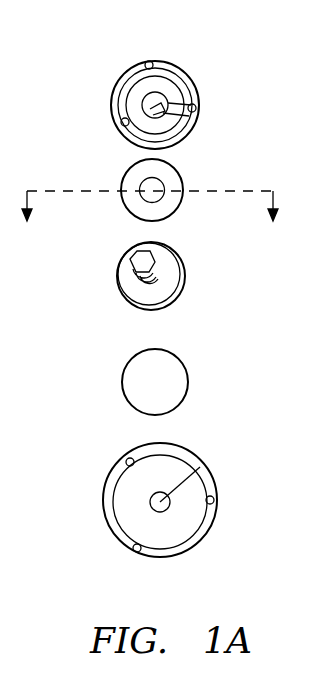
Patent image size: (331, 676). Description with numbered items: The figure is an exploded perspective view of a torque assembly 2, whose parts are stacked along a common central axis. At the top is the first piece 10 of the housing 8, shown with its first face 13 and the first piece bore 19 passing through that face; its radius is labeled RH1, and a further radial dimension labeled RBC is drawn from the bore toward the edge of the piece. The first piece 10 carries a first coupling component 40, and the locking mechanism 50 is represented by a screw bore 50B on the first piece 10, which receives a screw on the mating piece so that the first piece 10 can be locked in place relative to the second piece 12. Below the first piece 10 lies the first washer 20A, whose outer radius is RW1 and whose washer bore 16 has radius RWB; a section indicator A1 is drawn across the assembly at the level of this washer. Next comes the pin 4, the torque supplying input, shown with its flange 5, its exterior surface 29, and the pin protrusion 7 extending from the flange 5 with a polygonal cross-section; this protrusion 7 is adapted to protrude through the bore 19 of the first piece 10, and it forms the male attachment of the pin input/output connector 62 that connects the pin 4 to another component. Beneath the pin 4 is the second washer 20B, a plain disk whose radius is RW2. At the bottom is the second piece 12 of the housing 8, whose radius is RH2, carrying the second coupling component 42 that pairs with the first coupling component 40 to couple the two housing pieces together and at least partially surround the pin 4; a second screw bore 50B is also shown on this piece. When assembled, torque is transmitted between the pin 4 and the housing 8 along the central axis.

The torque assembly 2 is at (97, 318).
The pin 4 is at (185, 285).
The flange 5 is at (163, 312).
The pin protrusion 7 is at (143, 262).
The housing 8 is at (185, 75).
The first piece 10 is at (188, 90).
The second piece 12 is at (178, 530).
The first face 13 is at (137, 85).
The washer bore 16 is at (163, 180).
The first piece bore 19 is at (162, 93).
The first washer 20A is at (181, 196).
The second washer 20B is at (188, 382).
The exterior surface 29 is at (180, 298).
The first coupling component 40 is at (121, 125).
The second coupling component 42 is at (128, 462).
The locking mechanism 50 is at (150, 61).
The screw bore 50B is at (117, 110).
The pin input/output connector 62 is at (117, 280).
The radius of the first piece of the housing RH1 is at (183, 112).
The radius of the second piece of the housing RH2 is at (173, 492).
The bolt circle radius RBC is at (187, 118).
The radius of the first washer bore RWB is at (150, 182).
The radius of the first washer RW1 is at (152, 190).
The radius of the second washer RW2 is at (155, 380).
The section line A1 is at (154, 228).